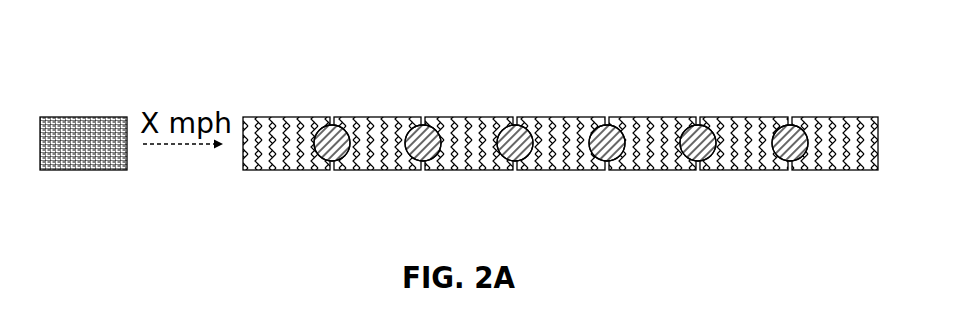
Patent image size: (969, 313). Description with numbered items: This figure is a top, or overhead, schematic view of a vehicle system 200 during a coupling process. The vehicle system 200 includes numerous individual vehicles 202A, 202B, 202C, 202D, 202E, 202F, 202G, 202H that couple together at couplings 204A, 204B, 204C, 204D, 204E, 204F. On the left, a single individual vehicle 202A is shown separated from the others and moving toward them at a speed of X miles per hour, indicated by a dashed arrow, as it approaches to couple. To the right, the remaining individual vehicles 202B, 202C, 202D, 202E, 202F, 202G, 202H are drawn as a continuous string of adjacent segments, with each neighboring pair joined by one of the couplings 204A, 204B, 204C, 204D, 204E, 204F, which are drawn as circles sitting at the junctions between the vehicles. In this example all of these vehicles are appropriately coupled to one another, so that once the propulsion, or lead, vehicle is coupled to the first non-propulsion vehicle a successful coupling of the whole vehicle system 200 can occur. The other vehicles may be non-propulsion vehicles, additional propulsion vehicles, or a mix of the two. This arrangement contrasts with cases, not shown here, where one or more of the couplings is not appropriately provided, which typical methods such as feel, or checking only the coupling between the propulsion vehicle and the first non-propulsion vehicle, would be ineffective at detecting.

The vehicle system 200 is at (213, 50).
The individual vehicle 202A is at (85, 117).
The individual vehicle 202B is at (287, 117).
The individual vehicle 202C is at (379, 117).
The individual vehicle 202D is at (470, 117).
The individual vehicle 202E is at (562, 117).
The individual vehicle 202F is at (653, 117).
The individual vehicle 202G is at (746, 117).
The individual vehicle 202H is at (836, 117).
The coupling 204A is at (332, 145).
The coupling 204B is at (423, 145).
The coupling 204C is at (515, 145).
The coupling 204D is at (607, 145).
The coupling 204E is at (698, 145).
The coupling 204F is at (790, 145).